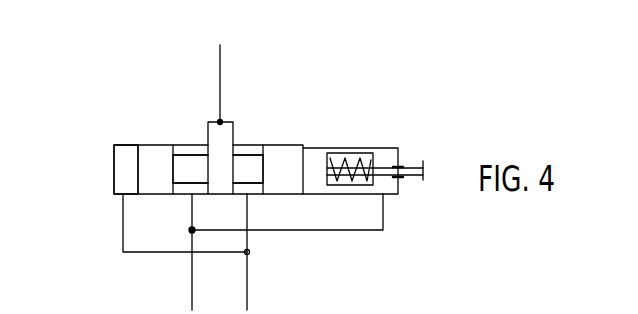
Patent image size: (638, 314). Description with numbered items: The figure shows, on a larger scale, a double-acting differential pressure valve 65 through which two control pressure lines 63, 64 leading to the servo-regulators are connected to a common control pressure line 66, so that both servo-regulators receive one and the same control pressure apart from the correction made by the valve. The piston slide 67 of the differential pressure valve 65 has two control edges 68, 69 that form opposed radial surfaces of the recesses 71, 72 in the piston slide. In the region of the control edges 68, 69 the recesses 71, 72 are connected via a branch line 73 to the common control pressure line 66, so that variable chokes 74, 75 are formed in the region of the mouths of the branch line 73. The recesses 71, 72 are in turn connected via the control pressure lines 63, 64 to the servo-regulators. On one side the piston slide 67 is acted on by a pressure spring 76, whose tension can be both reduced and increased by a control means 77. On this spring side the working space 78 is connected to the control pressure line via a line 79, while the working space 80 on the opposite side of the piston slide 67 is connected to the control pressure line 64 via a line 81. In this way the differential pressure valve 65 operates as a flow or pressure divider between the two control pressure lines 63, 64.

The control pressure line 63 is at (192, 289).
The control pressure line 64 is at (248, 293).
The differential pressure valve 65 is at (326, 140).
The common control pressure line 66 is at (219, 58).
The piston slide 67 is at (289, 160).
The control edge 68 is at (201, 145).
The control edge 69 is at (237, 145).
The recess 71 is at (181, 150).
The recess 72 is at (248, 150).
The branch line 73 is at (226, 120).
The variable choke 74 is at (190, 169).
The variable choke 75 is at (248, 169).
The pressure spring 76 is at (362, 152).
The control means 77 is at (423, 164).
The working space 78 is at (393, 189).
The line 79 is at (363, 235).
The working space 80 is at (123, 163).
The line 81 is at (123, 233).